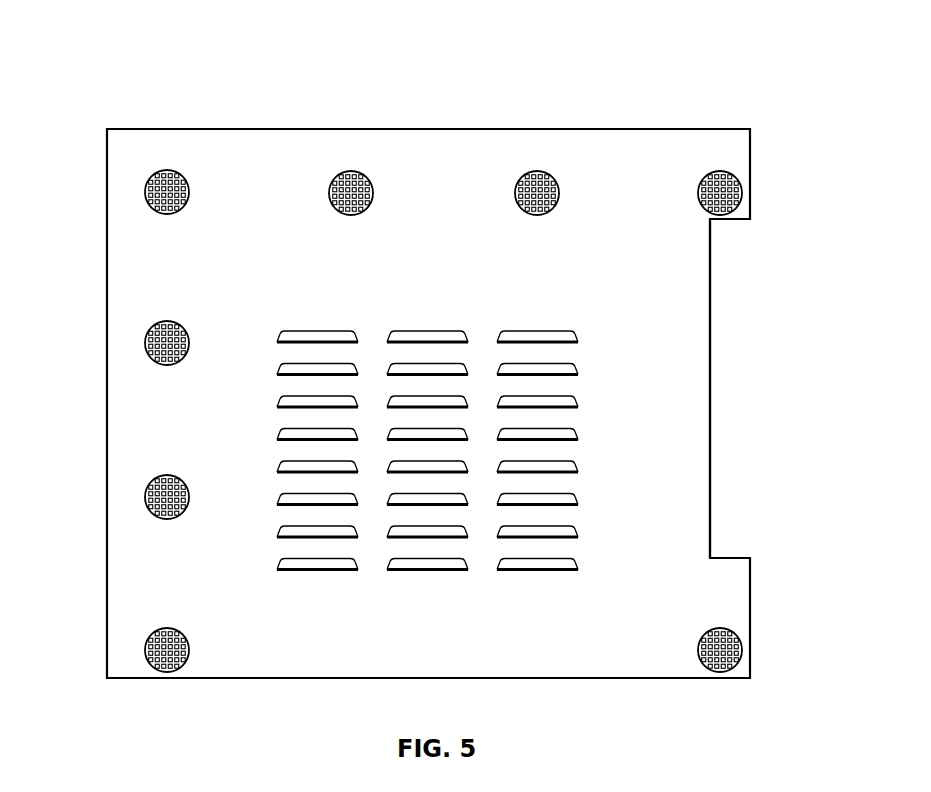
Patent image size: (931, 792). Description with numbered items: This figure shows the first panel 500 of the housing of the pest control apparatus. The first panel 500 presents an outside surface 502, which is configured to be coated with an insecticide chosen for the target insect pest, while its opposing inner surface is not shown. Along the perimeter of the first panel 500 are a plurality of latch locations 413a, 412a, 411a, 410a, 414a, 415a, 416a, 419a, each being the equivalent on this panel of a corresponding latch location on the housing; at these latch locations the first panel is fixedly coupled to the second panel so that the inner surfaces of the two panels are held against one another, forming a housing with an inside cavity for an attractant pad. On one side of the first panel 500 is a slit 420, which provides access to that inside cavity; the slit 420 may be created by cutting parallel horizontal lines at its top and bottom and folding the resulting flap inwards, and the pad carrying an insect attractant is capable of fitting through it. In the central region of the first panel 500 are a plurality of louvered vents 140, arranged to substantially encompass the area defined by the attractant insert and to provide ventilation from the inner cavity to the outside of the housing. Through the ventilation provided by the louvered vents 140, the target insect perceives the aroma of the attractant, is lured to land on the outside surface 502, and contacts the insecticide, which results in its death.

The first panel 500 is at (131, 40).
The outside surface 502 is at (126, 261).
The slit 420 is at (725, 393).
The latch location 413a is at (145, 192).
The latch location 412a is at (145, 343).
The latch location 411a is at (145, 497).
The latch location 410a is at (145, 650).
The latch location 414a is at (330, 193).
The latch location 415a is at (537, 171).
The latch location 416a is at (742, 192).
The latch location 419a is at (742, 650).
The louvered vents 140 is at (324, 575).